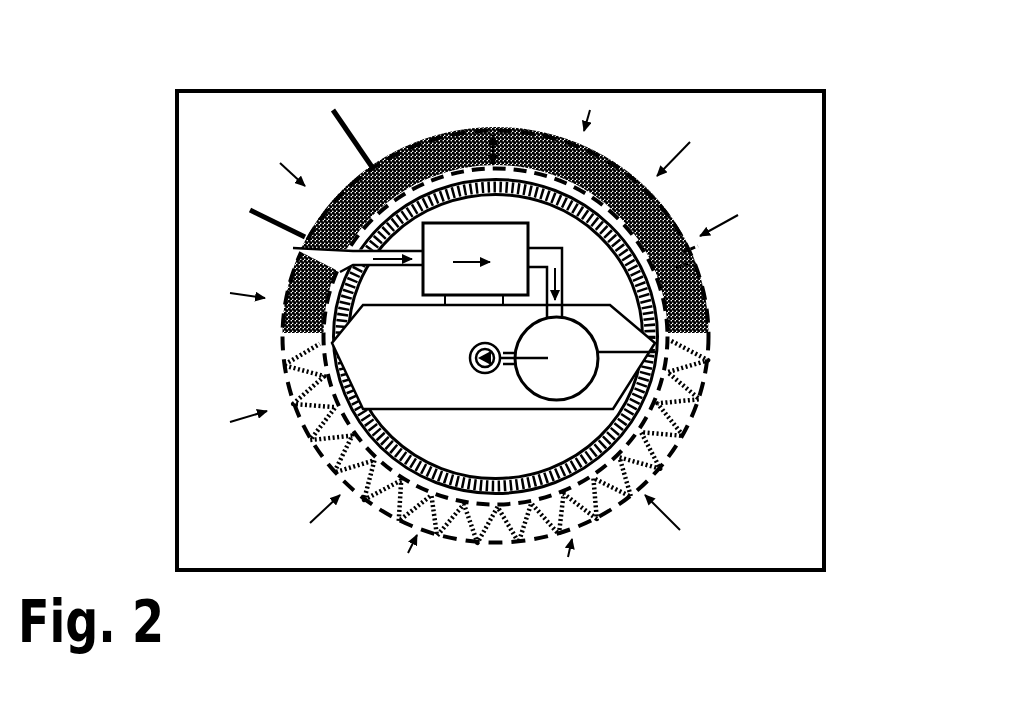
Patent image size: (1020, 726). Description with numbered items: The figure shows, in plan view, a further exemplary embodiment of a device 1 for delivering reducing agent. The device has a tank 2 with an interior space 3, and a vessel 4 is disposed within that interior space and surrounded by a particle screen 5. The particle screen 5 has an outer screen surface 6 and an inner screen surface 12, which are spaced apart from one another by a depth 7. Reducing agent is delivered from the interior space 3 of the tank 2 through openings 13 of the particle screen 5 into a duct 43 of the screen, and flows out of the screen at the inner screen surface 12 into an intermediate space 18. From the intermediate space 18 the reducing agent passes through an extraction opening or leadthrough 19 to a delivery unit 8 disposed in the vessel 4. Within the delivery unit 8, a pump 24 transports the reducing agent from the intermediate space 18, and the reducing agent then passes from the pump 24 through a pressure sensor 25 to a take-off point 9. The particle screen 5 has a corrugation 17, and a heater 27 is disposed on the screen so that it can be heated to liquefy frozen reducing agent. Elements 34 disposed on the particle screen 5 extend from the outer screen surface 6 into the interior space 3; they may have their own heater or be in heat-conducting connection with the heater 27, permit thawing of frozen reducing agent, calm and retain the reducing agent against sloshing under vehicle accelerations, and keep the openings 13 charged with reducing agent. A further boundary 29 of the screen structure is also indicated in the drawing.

The device 1 is at (158, 121).
The tank 2 is at (177, 175).
The interior space 3 is at (288, 153).
The vessel 4 is at (625, 435).
The particle screen 5 is at (675, 224).
The outer screen surface 6 is at (316, 206).
The depth 7 is at (500, 135).
The delivery unit 8 is at (479, 424).
The take-off point 9 is at (468, 362).
The inner screen surface 12 is at (655, 298).
The openings 13 is at (452, 135).
The corrugation 17 is at (593, 512).
The intermediate space 18 is at (323, 340).
The extraction opening or leadthrough 19 is at (307, 247).
The pump 24 is at (528, 223).
The pressure sensor 25 is at (657, 352).
The heater 27 is at (378, 502).
The outer boundary layer 29 is at (308, 90).
The elements 34 is at (365, 167).
The duct 43 is at (680, 262).